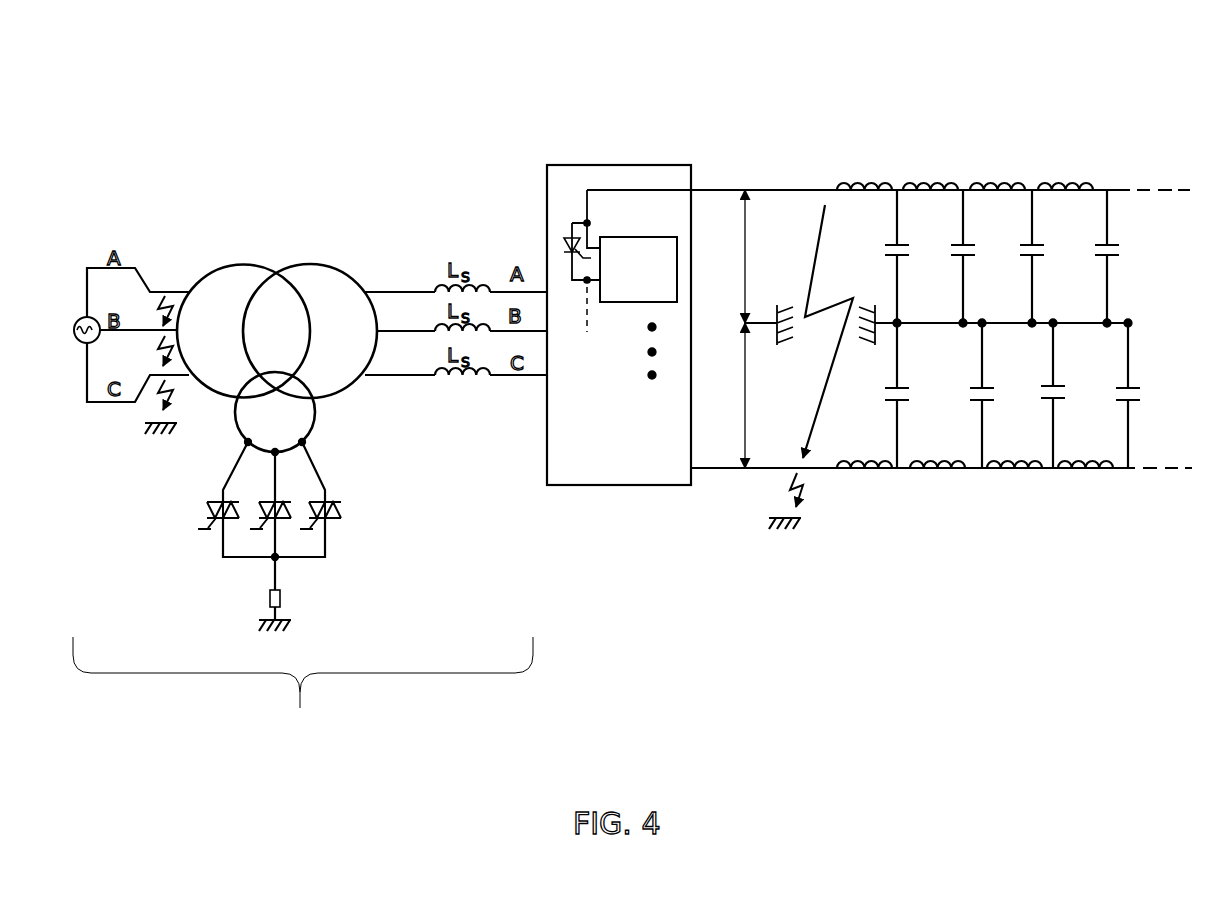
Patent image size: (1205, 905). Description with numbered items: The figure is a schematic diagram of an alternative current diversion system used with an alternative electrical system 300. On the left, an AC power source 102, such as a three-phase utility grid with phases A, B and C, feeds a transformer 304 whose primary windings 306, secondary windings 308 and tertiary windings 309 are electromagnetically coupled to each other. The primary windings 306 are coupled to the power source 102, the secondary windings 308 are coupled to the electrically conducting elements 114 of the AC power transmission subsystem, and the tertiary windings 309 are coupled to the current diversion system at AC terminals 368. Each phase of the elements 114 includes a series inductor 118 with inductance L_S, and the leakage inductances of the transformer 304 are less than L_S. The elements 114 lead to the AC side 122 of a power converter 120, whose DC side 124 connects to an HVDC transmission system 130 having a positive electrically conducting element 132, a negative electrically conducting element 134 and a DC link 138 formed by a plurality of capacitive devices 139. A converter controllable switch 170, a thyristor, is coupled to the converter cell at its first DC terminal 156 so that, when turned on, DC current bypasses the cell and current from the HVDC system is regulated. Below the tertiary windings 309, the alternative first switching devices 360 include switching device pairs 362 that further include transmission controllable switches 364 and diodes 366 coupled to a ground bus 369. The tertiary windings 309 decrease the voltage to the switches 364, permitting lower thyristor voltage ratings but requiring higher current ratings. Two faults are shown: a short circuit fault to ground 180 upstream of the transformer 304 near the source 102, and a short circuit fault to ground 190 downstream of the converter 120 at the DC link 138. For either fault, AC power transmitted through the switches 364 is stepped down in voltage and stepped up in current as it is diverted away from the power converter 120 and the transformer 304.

The AC power source 102 is at (74, 320).
The alternative electrical system 300 is at (277, 154).
The transformer 304 is at (285, 229).
The primary windings 306 is at (215, 282).
The secondary windings 308 is at (330, 283).
The tertiary windings 309 is at (307, 408).
The electrically conducting elements 114 is at (458, 244).
The series inductor 118 is at (482, 378).
The power converter 120 is at (657, 60).
The AC side 122 is at (552, 163).
The DC side 124 is at (666, 165).
The converter controllable switch 170 is at (560, 248).
The first DC terminal 156 is at (589, 222).
The HVDC transmission system 130 is at (900, 140).
The positive electrically conducting element 132 is at (792, 189).
The negative electrically conducting element 134 is at (752, 472).
The DC link 138 is at (972, 168).
The capacitive devices 139 is at (1122, 256).
The short circuit fault to ground 180 is at (182, 400).
The short circuit fault to ground 190 is at (815, 492).
The alternative first switching devices 360 is at (198, 507).
The alternative switching device pairs 362 is at (201, 528).
The alternative transmission controllable switches 364 is at (323, 502).
The diodes 366 is at (342, 510).
The AC terminals 368 is at (270, 454).
The ground bus 369 is at (325, 559).